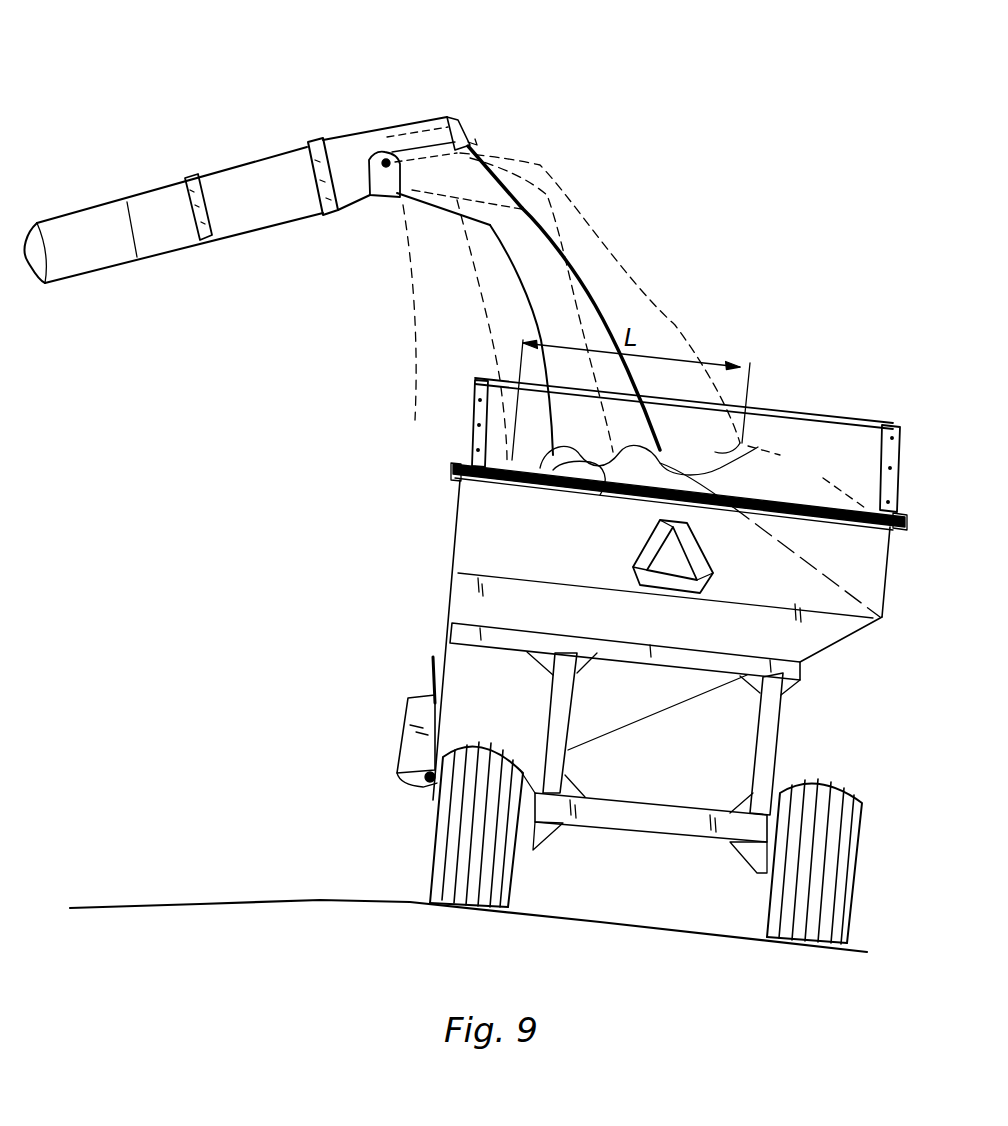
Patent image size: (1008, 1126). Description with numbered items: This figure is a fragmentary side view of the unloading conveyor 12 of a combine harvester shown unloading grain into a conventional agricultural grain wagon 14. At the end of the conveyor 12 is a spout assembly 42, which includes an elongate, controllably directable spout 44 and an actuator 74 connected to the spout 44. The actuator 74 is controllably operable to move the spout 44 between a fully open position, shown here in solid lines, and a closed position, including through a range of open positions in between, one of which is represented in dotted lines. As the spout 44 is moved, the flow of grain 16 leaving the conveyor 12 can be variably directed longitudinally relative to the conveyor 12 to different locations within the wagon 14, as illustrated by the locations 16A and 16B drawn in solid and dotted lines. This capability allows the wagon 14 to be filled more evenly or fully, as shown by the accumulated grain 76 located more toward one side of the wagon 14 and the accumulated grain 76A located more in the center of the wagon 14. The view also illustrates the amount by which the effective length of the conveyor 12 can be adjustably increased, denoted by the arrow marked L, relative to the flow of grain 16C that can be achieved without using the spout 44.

The unloading conveyor 12 is at (398, 86).
The actuator 74 is at (343, 194).
The spout assembly 42 is at (489, 156).
The spout 44 is at (500, 178).
The flow of grain 16 is at (560, 247).
The flow of grain without spout 16C is at (417, 293).
The grain flow location 16B is at (757, 447).
The grain flow location 16A is at (600, 495).
The accumulated grain 76 is at (540, 467).
The accumulated grain 76A is at (750, 448).
The grain wagon 14 is at (839, 403).